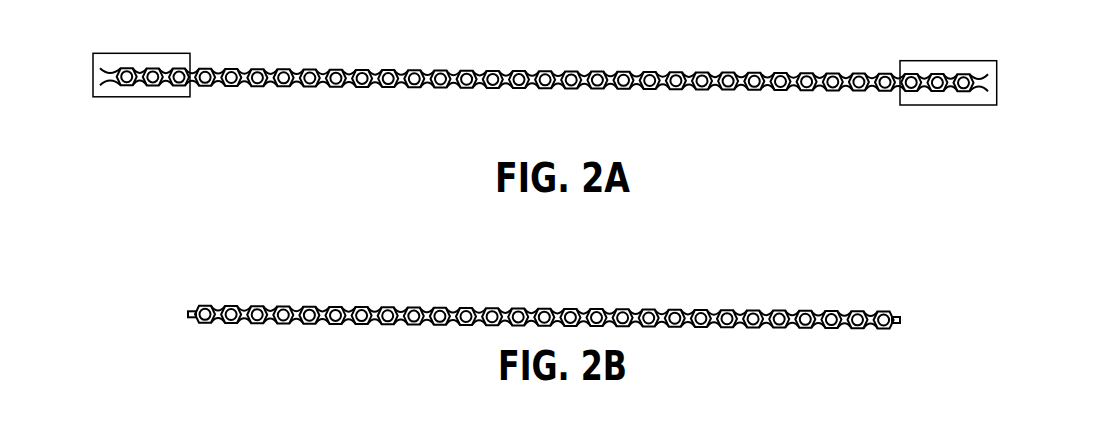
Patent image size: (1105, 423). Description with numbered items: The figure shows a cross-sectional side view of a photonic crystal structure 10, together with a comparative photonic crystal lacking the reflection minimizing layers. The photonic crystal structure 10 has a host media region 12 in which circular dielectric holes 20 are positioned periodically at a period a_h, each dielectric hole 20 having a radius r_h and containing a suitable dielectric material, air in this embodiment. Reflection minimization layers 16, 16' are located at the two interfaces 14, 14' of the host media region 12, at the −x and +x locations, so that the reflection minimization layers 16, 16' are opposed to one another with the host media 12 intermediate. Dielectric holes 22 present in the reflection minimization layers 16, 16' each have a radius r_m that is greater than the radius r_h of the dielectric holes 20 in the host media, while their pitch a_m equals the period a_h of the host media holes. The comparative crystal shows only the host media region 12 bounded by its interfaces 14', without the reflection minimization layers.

In FIG. 2A, the photonic crystal structure 10 is at (690, 63).
In FIG. 2B, the photonic crystal structure 10 is at (617, 292).
In FIG. 2A, the host media region 12 is at (897, 90).
In FIG. 2B, the host media region 12 is at (517, 306).
In FIG. 2A, the interface 14 is at (215, 116).
In FIG. 2A, the interface 14' is at (880, 121).
In FIG. 2B, the interface 14' is at (546, 294).
In FIG. 2A, the reflection minimization layer 16 is at (163, 53).
In FIG. 2A, the reflection minimization layer 16' is at (971, 60).
In FIG. 2A, the dielectric holes 20 is at (377, 67).
In FIG. 2A, the dielectric holes 22 is at (975, 92).